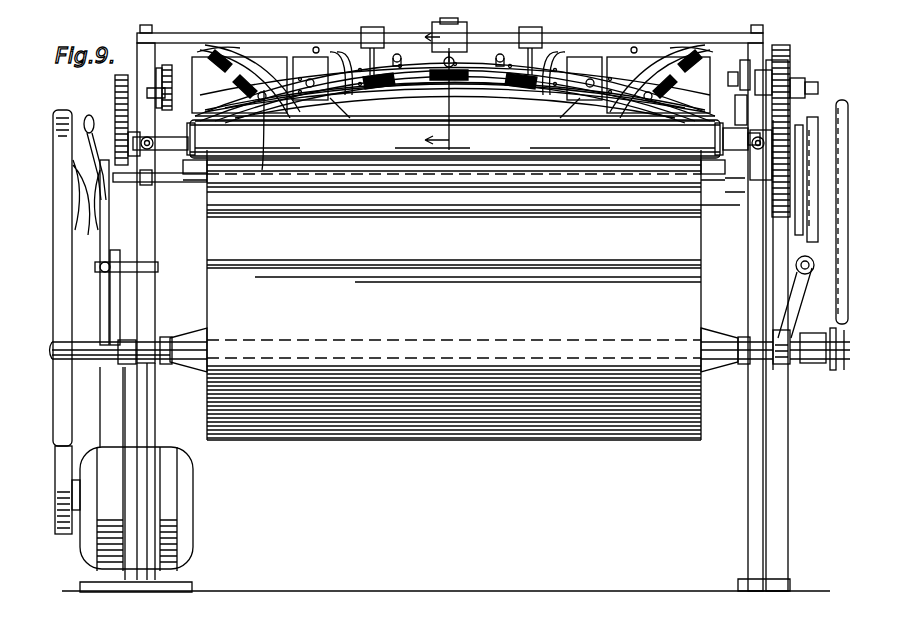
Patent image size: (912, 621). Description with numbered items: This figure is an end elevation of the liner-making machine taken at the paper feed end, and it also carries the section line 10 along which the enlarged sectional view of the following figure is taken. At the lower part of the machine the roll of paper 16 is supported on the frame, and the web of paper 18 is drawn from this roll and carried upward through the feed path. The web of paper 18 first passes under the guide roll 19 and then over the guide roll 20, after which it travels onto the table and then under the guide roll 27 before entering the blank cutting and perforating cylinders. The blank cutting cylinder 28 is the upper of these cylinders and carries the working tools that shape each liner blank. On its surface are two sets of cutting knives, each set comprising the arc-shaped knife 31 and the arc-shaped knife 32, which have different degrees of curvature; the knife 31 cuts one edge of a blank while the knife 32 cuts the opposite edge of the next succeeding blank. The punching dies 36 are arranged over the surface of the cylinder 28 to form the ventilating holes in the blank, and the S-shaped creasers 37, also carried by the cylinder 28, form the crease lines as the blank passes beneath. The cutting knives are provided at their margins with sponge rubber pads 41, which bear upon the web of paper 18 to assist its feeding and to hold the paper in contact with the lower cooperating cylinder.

The section line 10— 10 is at (435, 82).
The roll of paper 16 is at (454, 295).
The web of paper 18 is at (454, 204).
The guide roll 19 is at (514, 212).
The guide roll 20 is at (722, 185).
The guide roll 27 is at (362, 100).
The blank cutting cylinder 28 is at (270, 66).
The arc-shaped knife 31 is at (386, 93).
The arc-shaped knife 32 is at (505, 80).
The punching dies 36 is at (598, 92).
The S-shaped creasers 37 is at (302, 116).
The sponge rubber pads 41 is at (543, 84).